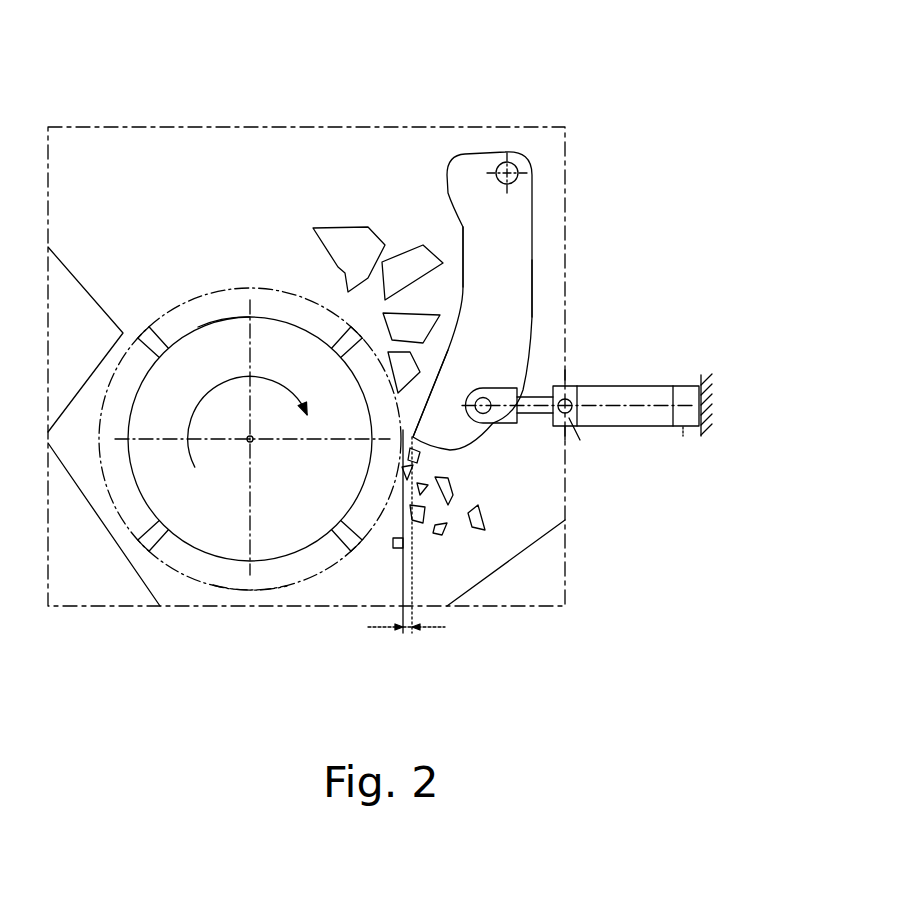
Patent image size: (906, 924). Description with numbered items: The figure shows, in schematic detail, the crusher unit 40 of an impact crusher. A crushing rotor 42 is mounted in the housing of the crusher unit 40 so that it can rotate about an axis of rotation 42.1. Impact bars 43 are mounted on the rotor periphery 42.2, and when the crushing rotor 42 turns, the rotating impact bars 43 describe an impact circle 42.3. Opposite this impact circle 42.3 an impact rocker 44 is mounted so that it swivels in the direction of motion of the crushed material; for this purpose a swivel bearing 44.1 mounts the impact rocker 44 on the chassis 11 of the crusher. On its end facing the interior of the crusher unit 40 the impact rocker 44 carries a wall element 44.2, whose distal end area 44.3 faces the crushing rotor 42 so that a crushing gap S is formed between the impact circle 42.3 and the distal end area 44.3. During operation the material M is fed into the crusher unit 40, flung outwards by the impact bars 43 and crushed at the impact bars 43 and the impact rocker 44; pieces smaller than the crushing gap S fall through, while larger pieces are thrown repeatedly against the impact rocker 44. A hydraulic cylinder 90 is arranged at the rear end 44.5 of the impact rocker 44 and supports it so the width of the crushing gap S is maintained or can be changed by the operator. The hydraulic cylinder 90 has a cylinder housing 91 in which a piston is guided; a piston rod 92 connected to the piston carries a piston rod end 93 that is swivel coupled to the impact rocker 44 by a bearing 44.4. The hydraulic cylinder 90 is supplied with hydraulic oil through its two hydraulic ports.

The crusher unit 40 is at (319, 119).
The crushing rotor 42 is at (238, 300).
The axis of rotation 42.1 is at (250, 440).
The rotor periphery 42.2 is at (198, 327).
The impact circle 42.3 is at (233, 590).
The impact bars 43 is at (348, 343).
The material M is at (360, 243).
The impact rocker 44 is at (513, 260).
The swivel bearing 44.1 is at (512, 170).
The wall element 44.2 is at (459, 223).
The distal end area 44.3 is at (430, 432).
The bearing 44.4 is at (500, 386).
The rear end 44.5 is at (533, 280).
The hydraulic cylinder 90 is at (640, 432).
The cylinder housing 91 is at (655, 383).
The piston rod 92 is at (532, 414).
The piston rod end 93 is at (500, 424).
The chassis 11 is at (704, 398).
The crushing gap S is at (403, 627).